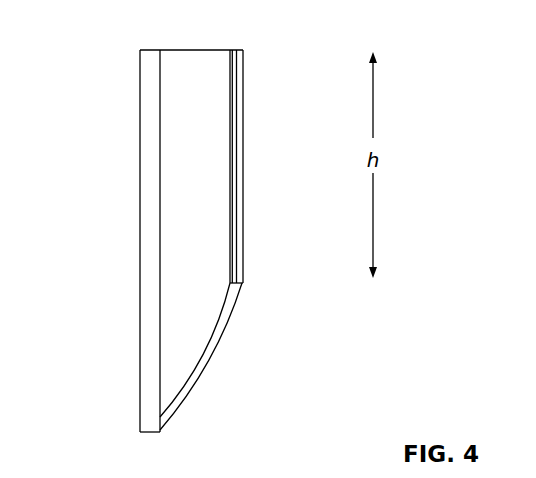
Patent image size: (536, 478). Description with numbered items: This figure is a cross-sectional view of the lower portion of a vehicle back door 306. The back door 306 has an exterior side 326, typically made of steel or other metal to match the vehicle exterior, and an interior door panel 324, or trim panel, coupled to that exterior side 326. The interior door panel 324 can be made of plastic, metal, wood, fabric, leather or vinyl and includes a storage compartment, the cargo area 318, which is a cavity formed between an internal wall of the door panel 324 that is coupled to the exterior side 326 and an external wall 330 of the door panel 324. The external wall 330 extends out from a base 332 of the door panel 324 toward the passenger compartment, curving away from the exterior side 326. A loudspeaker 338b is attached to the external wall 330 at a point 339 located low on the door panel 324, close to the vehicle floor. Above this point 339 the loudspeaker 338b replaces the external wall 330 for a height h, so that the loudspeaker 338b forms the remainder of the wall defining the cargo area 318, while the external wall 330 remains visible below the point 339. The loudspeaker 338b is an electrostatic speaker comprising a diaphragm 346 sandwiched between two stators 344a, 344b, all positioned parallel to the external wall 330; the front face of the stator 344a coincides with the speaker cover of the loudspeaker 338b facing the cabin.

The back door 306 is at (192, 237).
The cargo area 318 is at (197, 58).
The interior door panel 324 is at (148, 263).
The exterior side 326 is at (140, 185).
The external wall 330 is at (233, 315).
The base 332 is at (157, 440).
The loudspeaker 338b is at (250, 88).
The point 339 is at (254, 283).
The stator 344a is at (238, 193).
The stator 344b is at (230, 208).
The diaphragm 346 is at (238, 157).